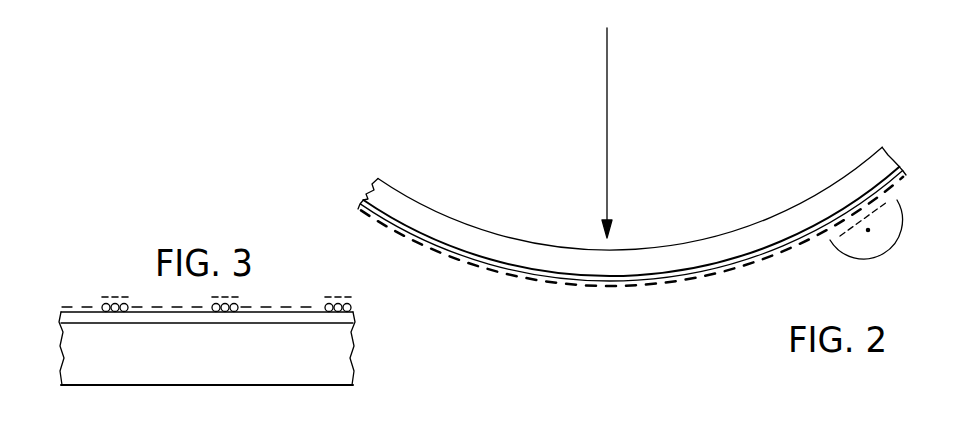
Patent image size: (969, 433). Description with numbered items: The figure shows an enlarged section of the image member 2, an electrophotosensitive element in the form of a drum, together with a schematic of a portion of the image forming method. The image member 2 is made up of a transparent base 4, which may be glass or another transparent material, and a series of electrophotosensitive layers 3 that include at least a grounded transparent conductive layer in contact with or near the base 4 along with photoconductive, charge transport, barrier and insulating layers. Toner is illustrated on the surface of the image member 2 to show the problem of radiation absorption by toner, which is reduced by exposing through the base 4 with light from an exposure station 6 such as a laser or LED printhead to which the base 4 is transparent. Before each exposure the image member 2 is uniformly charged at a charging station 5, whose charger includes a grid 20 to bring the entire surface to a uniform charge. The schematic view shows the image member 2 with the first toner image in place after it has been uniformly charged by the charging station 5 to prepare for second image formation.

In FIG. 3, the image member 2 is at (256, 353).
In FIG. 2, the image member 2 is at (634, 241).
In FIG. 3, the electrophotosensitive layers 3 is at (353, 318).
In FIG. 2, the electrophotosensitive layers 3 is at (742, 274).
In FIG. 3, the transparent base 4 is at (353, 358).
In FIG. 2, the transparent base 4 is at (818, 208).
In FIG. 2, the charging station 5 is at (887, 252).
In FIG. 2, the exposure station 6 is at (607, 103).
In FIG. 2, the grid 20 is at (842, 240).